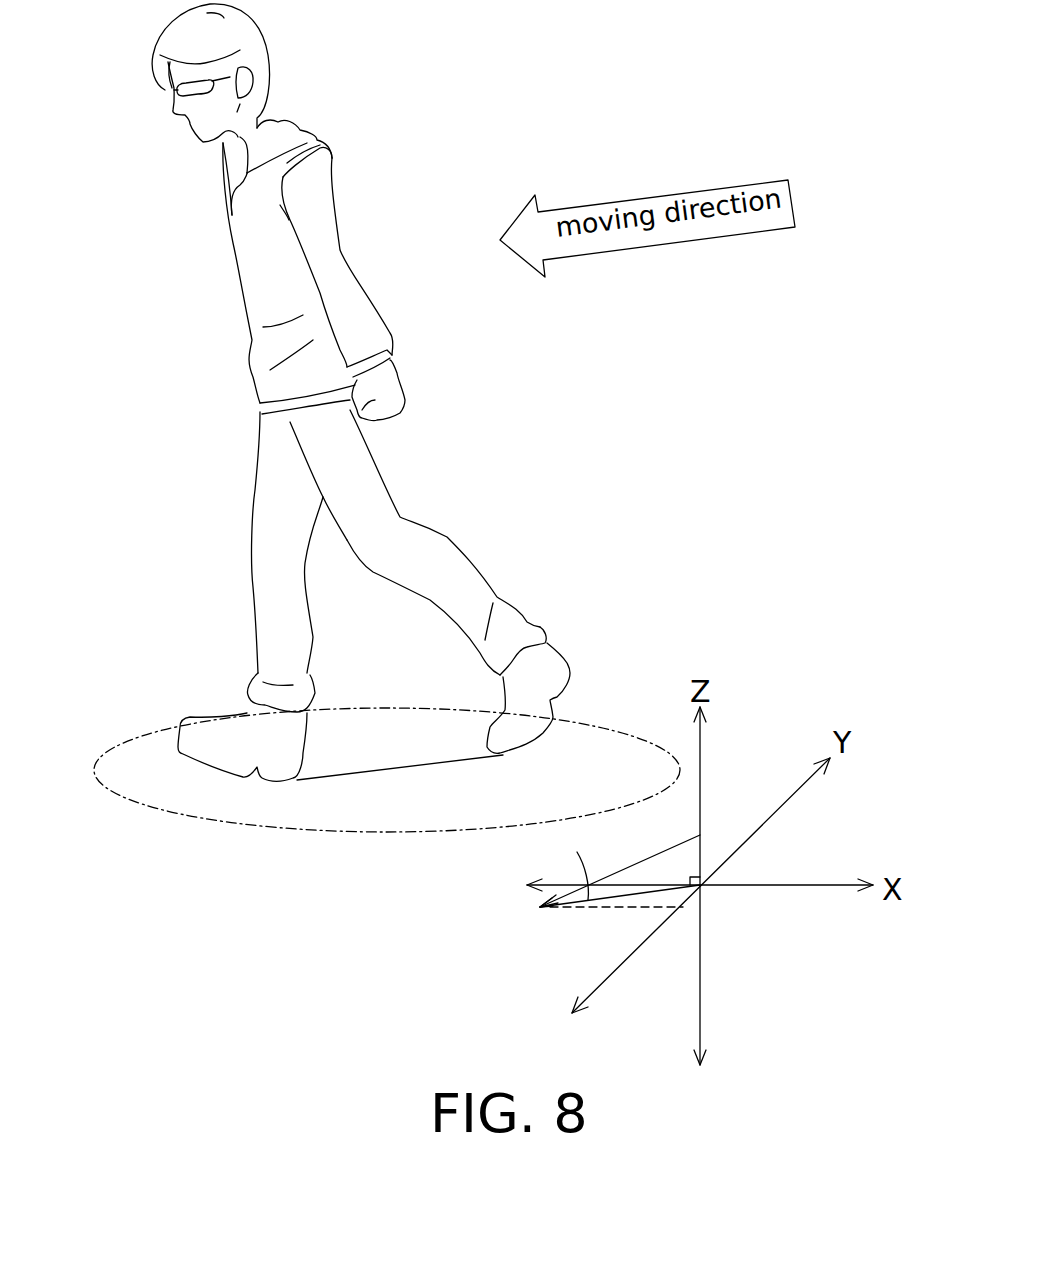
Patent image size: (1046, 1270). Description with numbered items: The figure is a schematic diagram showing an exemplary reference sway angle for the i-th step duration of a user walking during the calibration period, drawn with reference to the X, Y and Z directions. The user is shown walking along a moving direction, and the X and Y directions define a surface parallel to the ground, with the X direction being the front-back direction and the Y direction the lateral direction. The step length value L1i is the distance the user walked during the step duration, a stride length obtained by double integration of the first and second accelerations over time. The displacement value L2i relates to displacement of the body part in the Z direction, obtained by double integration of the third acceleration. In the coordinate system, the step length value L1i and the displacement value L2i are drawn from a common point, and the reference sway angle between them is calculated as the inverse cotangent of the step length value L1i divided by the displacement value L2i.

The step length value L1i is at (625, 897).
The displacement value L2i is at (708, 858).